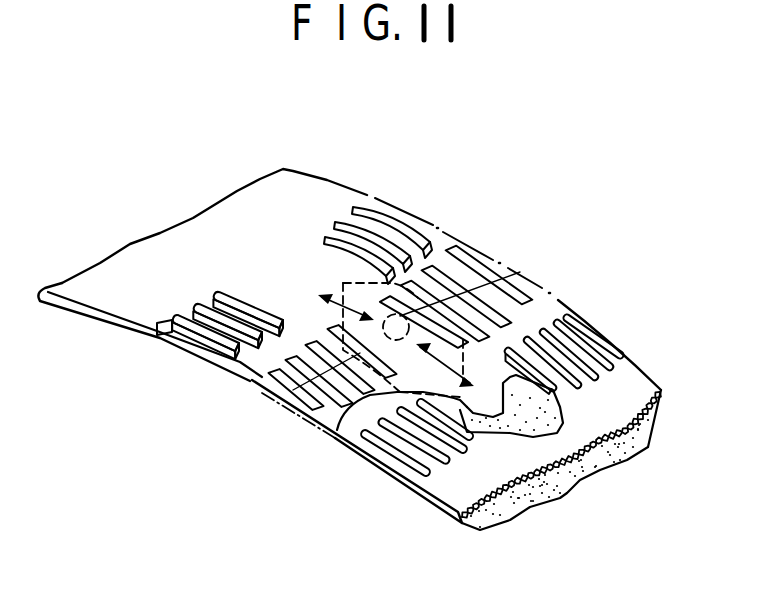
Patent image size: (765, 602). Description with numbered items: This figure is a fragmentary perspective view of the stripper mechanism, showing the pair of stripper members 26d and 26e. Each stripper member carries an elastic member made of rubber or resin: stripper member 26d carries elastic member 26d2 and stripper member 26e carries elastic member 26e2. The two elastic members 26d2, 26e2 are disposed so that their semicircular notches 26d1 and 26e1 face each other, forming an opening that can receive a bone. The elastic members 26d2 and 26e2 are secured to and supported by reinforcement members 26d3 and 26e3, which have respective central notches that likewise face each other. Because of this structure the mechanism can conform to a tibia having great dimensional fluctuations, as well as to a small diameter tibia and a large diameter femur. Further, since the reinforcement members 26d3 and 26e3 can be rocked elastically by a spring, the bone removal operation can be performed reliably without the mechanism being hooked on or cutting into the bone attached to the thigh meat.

The stripper member 26d is at (376, 186).
The semicircular notch 26d1 is at (303, 315).
The elastic member 26d2 is at (393, 296).
The reinforcement member 26d3 is at (413, 217).
The stripper member 26e is at (379, 497).
The semicircular notch 26e1 is at (505, 378).
The elastic member 26e2 is at (337, 430).
The reinforcement member 26e3 is at (480, 510).